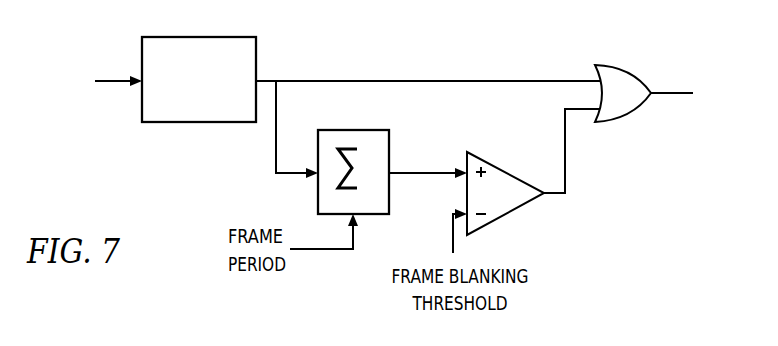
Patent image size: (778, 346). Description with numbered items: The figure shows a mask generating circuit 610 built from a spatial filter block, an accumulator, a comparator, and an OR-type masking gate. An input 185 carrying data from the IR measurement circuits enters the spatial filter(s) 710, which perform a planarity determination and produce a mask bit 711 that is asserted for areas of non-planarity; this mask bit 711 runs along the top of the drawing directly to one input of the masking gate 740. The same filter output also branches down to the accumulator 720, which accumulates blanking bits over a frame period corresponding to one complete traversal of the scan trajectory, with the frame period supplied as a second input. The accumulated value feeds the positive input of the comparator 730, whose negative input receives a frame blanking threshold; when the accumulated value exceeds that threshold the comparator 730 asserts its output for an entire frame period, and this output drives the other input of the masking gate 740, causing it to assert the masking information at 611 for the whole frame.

The input signal 185 is at (110, 76).
The spatial filter(s) 710 is at (199, 123).
The mask bit 711 is at (432, 80).
The accumulator 720 is at (393, 137).
The comparator 730 is at (510, 175).
The masking gate 740 is at (639, 111).
The masking information 611 is at (674, 92).
The mask generating circuit 610 is at (680, 229).